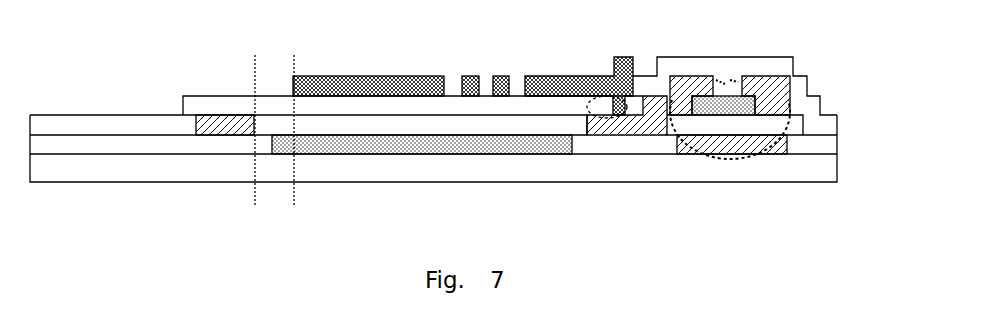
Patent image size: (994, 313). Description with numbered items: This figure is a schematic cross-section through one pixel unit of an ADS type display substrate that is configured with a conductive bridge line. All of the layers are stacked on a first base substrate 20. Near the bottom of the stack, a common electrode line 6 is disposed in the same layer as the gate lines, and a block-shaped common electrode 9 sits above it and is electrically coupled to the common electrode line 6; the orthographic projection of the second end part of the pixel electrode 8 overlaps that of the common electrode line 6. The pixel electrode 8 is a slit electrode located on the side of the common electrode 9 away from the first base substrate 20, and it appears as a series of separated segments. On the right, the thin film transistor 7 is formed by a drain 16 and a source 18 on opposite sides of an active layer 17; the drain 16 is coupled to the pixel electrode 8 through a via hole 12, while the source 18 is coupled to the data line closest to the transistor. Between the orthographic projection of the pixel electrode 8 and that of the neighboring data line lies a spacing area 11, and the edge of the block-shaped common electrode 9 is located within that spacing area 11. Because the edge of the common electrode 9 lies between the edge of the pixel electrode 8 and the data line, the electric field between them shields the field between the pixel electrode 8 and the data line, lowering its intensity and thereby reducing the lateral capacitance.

The common electrode line 6 is at (215, 115).
The thin film transistor 7 is at (731, 72).
The pixel electrode 8 is at (549, 77).
The common electrode 9 is at (379, 137).
The spacing area 11 is at (275, 77).
The via hole 12 is at (629, 58).
The drain 16 is at (683, 75).
The active layer 17 is at (751, 108).
The source 18 is at (773, 80).
The first base substrate 20 is at (828, 167).